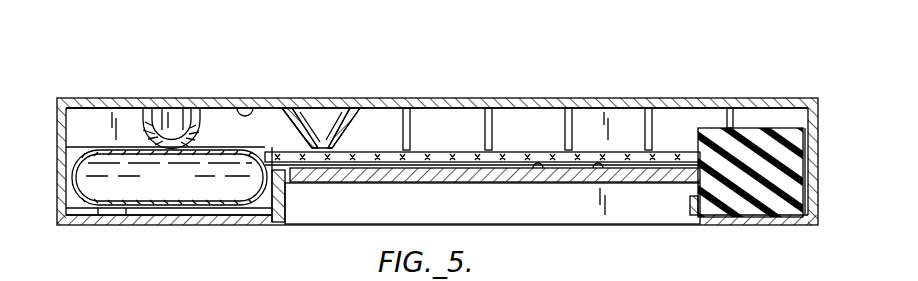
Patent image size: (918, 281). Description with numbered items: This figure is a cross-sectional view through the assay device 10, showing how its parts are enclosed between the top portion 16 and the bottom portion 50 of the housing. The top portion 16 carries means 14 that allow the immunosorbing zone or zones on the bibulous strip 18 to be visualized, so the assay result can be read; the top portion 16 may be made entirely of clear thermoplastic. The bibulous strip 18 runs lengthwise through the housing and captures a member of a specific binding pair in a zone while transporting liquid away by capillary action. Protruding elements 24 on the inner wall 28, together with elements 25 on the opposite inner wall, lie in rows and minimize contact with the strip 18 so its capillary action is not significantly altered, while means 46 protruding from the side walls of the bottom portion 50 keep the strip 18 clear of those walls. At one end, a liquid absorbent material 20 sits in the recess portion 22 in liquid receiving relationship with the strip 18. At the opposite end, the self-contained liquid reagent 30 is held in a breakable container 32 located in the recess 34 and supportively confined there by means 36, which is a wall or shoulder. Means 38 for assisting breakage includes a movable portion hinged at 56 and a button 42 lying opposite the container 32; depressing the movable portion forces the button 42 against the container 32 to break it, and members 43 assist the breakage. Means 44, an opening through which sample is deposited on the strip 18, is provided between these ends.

The device 10 is at (740, 42).
The means for visualizing the immunosorbing zone 14 is at (593, 100).
The top portion of housing 16 is at (708, 97).
The bibulous strip 18 is at (382, 152).
The liquid absorbent material 20 is at (758, 205).
The recess portion 22 is at (697, 203).
The protruding elements 24 is at (393, 168).
The protruding elements 25 is at (493, 122).
The inner wall 28 is at (598, 168).
The self-contained liquid reagent 30 is at (183, 193).
The breakable container 32 is at (207, 143).
The recess 34 is at (240, 206).
The means for supportively confining container 36 is at (270, 214).
The means for assisting in breaking container 38 is at (120, 97).
The button 42 is at (180, 112).
The members assisting breakage 43 is at (102, 209).
The means for introducing the sample 44 is at (325, 104).
The means for maintaining strip free from side walls 46 is at (538, 168).
The bottom portion 50 is at (113, 226).
The hinge 56 is at (244, 101).